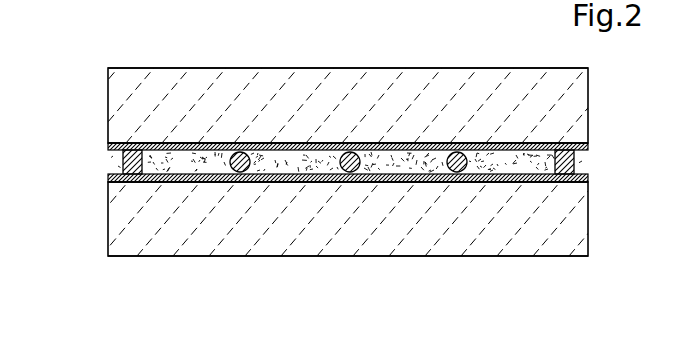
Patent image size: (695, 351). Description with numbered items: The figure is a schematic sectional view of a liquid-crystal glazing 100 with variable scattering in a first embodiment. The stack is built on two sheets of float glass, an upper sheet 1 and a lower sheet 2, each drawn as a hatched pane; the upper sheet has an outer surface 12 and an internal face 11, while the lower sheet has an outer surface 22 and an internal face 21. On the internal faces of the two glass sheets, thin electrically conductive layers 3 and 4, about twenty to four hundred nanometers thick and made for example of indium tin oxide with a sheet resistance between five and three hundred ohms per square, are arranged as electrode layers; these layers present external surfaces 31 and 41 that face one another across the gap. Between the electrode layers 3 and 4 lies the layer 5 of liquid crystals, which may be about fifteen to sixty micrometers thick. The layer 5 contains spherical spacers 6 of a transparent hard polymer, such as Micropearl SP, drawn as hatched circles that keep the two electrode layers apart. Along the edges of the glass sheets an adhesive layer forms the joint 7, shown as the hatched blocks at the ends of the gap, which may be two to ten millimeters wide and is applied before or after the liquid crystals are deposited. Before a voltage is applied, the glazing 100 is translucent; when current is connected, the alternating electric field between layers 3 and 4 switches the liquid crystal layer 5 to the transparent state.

The liquid-crystal glazing 100 is at (78, 72).
The sheet of float glass 1 is at (135, 77).
The outer surface of first pane 12 is at (250, 68).
The internal face 11 is at (182, 150).
The electrically conductive layer 3 is at (110, 146).
The external surface 31 is at (497, 152).
The electrically conductive layer 4 is at (110, 180).
The surface of second coating layer 41 is at (520, 172).
The second glass pane 2 is at (142, 244).
The outer surface of second pane 22 is at (313, 258).
The external surface / internal face 21 is at (370, 180).
The layer of liquid crystals 5 is at (425, 153).
The spacers 6 is at (350, 151).
The joint 7 is at (137, 146).